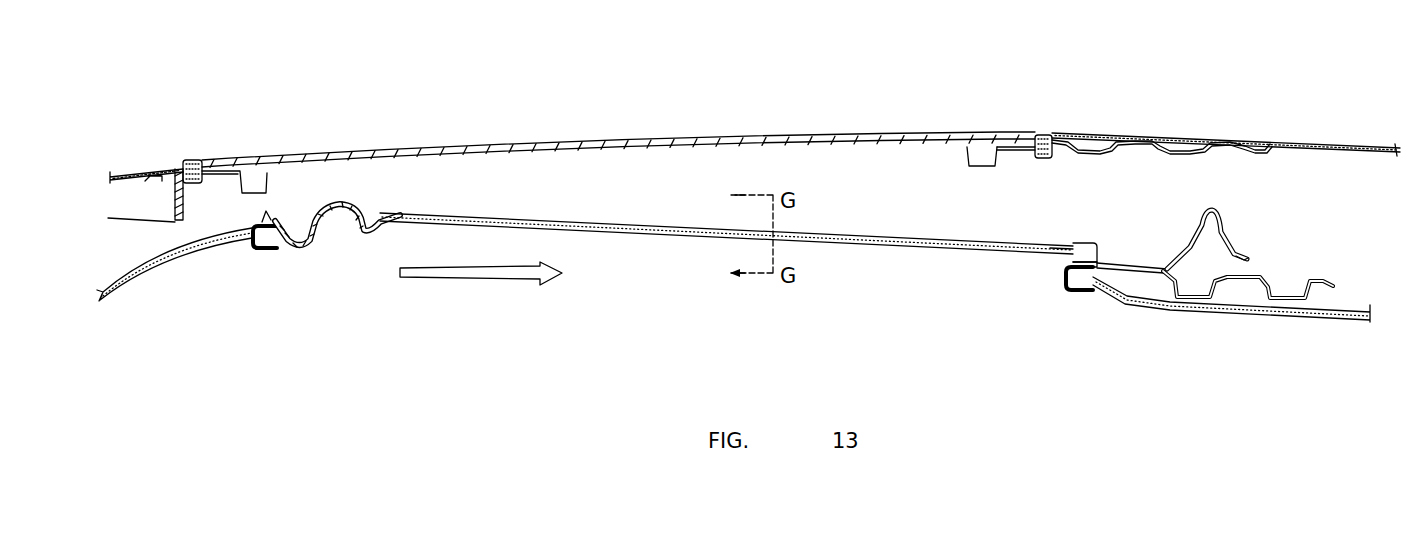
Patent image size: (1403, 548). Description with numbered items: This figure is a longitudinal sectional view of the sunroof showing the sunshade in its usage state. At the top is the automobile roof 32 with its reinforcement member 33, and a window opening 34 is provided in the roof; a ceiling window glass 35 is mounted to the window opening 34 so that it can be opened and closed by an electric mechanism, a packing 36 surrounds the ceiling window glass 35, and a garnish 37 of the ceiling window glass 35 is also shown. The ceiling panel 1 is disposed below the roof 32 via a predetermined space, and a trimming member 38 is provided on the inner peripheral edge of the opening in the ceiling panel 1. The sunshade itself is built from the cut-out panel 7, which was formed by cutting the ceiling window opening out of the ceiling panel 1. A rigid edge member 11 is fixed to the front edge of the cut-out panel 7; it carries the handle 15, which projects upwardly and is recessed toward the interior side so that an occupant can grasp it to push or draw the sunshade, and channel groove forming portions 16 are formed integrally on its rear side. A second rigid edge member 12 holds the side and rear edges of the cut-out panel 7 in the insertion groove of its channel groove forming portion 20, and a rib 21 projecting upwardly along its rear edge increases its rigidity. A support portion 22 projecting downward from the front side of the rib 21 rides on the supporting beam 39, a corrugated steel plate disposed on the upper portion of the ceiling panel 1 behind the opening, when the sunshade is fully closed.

The ceiling panel 1 is at (1267, 314).
The cut-out panel 7 is at (646, 238).
The rigid edge member 11 is at (337, 269).
The rigid edge member 12 is at (1238, 247).
The handle 15 is at (324, 234).
The channel groove forming portions 16 is at (1039, 268).
The channel groove forming portion 20 is at (1084, 250).
The rib 21 is at (1218, 210).
The support portion 22 is at (1132, 264).
The automobile roof 32 is at (1258, 140).
The reinforcement member 33 is at (1173, 153).
The window opening 34 is at (1053, 130).
The ceiling window glass 35 is at (658, 137).
The packing 36 is at (190, 160).
The garnish 37 is at (223, 176).
The trimming member 38 is at (260, 250).
The supporting beam 39 is at (1271, 280).